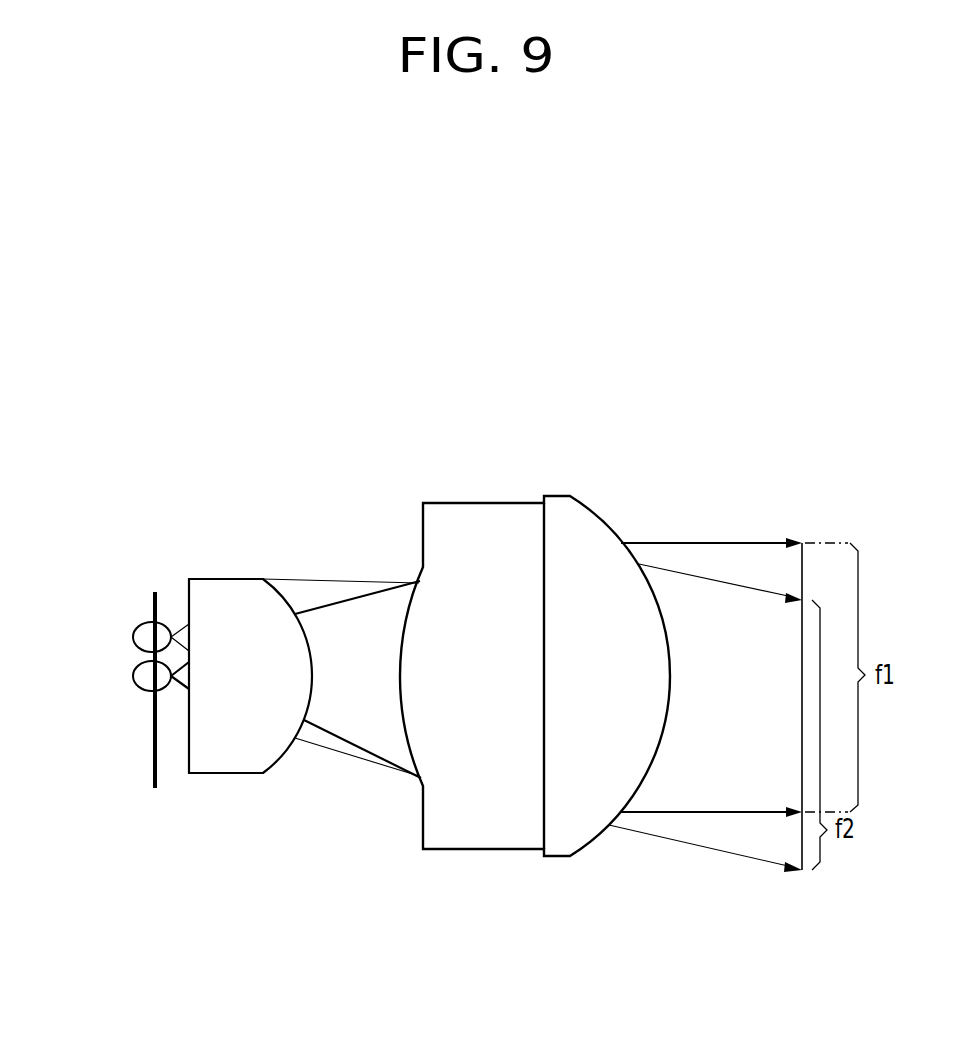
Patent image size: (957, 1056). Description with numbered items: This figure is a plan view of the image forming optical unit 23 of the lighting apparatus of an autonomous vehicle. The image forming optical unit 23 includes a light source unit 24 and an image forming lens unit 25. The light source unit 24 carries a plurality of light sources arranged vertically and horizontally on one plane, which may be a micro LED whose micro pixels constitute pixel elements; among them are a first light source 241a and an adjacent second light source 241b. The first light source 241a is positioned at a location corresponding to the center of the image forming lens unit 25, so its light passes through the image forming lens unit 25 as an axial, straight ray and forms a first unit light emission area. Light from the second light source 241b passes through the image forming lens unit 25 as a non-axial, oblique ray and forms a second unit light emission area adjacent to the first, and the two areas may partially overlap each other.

The image forming optical unit 23 is at (430, 432).
The light source unit 24 is at (152, 592).
The first light source 241a is at (140, 678).
The second light source 241b is at (138, 636).
The image forming lens unit 25 is at (680, 483).